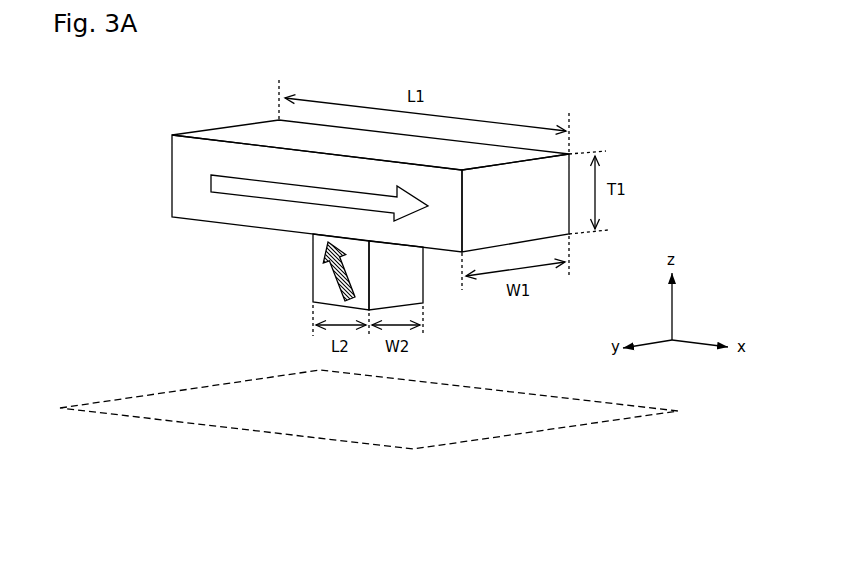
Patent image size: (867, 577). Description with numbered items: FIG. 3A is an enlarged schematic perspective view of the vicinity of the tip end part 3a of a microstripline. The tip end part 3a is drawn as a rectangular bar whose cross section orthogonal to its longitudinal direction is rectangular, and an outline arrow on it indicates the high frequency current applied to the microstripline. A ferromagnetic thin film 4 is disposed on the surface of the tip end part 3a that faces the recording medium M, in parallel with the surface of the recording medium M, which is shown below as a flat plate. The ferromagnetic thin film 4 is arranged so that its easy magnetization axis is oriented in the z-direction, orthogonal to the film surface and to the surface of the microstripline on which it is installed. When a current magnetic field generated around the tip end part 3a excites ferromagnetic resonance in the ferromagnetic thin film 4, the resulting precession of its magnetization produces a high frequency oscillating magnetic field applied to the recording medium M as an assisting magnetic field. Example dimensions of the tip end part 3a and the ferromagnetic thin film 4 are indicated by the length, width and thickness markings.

The tip end part 3a is at (178, 178).
The ferromagnetic thin film 4 is at (318, 281).
The recording medium M is at (124, 404).